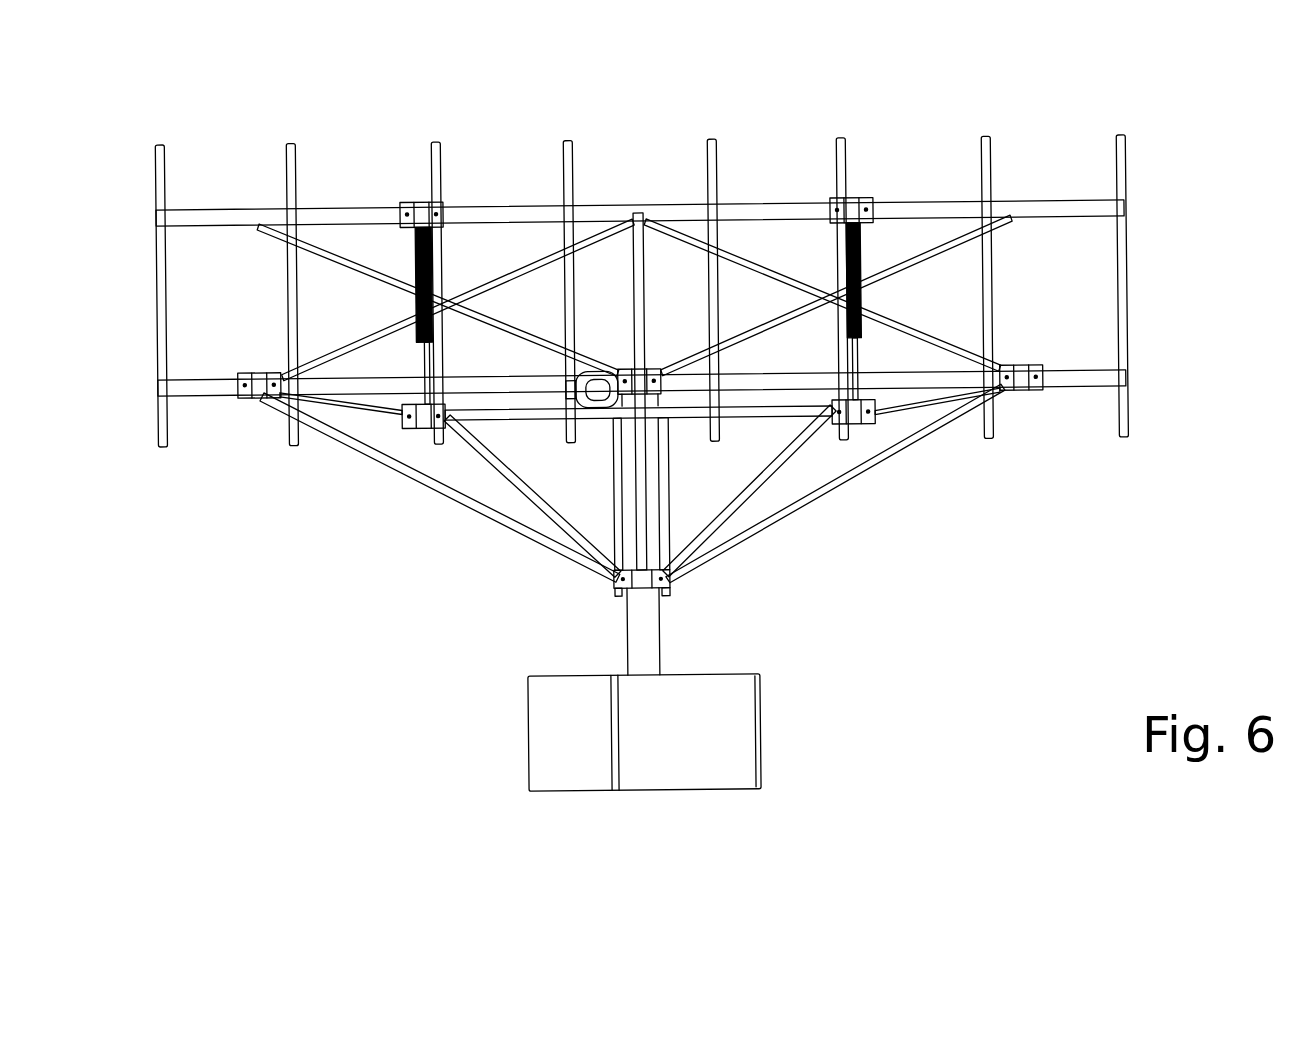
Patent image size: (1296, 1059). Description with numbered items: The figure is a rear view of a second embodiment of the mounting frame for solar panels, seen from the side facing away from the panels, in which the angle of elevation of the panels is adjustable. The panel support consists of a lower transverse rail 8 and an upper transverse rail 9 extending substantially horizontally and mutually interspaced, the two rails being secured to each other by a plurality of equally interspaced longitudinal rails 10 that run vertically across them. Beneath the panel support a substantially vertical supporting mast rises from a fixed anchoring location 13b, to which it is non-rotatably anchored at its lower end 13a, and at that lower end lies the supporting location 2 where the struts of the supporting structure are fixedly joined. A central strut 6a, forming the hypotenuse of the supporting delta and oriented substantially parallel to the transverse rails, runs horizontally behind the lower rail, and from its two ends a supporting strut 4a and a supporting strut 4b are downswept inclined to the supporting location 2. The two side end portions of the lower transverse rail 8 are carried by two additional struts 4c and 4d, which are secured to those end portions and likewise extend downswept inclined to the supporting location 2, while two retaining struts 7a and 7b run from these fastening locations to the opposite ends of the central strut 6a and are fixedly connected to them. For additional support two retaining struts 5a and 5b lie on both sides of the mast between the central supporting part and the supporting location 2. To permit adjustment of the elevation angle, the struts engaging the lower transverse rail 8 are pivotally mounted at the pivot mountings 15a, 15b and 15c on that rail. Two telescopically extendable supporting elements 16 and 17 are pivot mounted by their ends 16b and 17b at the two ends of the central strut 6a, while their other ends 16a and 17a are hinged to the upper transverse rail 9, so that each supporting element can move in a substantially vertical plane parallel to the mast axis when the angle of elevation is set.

The supporting location 2 is at (596, 595).
The supporting strut 4a is at (538, 507).
The supporting strut 4b is at (757, 473).
The additional strut 4c is at (443, 492).
The additional strut 4d is at (853, 468).
The retaining strut 5a is at (610, 460).
The retaining strut 5b is at (670, 457).
The central strut 6a is at (507, 413).
The retaining strut 7a is at (337, 413).
The retaining strut 7b is at (953, 403).
The lower transverse rail 8 is at (1095, 383).
The upper transverse rail 9 is at (1083, 208).
The longitudinal rails 10 is at (170, 153).
The lower end of the mast 13a is at (648, 620).
The fixed anchoring location 13b is at (718, 715).
The pivot mounting 15a is at (245, 370).
The pivot mounting 15b is at (657, 368).
The pivot mounting 15c is at (1035, 363).
The telescopically extendable supporting element 16 is at (400, 302).
The other end of supporting element 16a is at (403, 202).
The one end of supporting element 16b is at (403, 433).
The telescopically extendable supporting element 17 is at (878, 298).
The other end of supporting element 17a is at (828, 198).
The one end of supporting element 17b is at (872, 428).